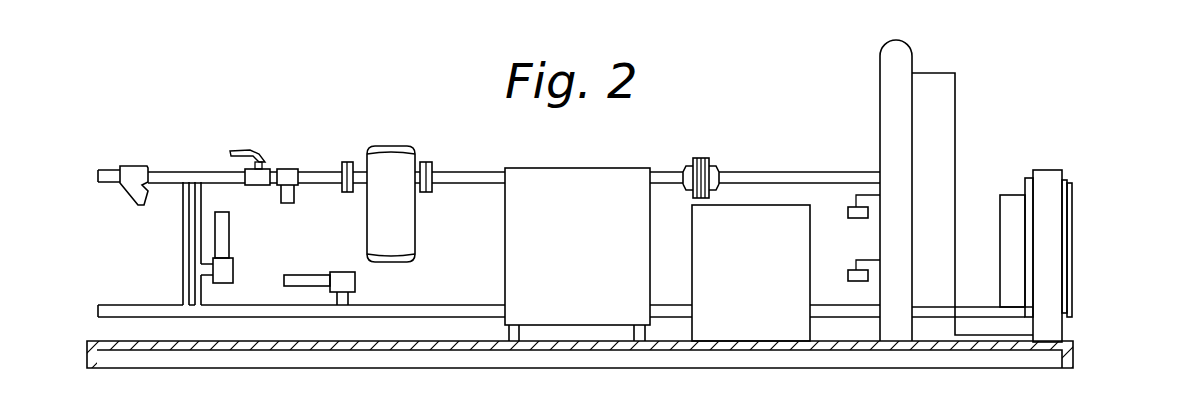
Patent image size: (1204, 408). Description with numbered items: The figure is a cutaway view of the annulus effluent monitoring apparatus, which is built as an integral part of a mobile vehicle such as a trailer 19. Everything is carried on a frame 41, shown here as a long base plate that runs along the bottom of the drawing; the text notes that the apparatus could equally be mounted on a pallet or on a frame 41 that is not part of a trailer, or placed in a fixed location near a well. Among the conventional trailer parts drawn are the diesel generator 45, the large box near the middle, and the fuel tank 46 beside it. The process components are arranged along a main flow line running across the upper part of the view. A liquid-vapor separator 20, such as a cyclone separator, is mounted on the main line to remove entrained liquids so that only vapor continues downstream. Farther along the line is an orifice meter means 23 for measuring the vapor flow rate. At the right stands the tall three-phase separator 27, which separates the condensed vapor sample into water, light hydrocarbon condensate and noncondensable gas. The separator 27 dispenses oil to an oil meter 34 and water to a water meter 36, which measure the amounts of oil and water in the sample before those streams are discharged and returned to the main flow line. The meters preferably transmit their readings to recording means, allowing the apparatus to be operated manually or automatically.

The trailer 19 is at (1013, 139).
The liquid-vapor separator 20 is at (390, 145).
The orifice meter means 23 is at (703, 158).
The three-phase separator 27 is at (880, 76).
The oil meter 34 is at (848, 213).
The water meter 36 is at (848, 275).
The frame 41 is at (1075, 351).
The diesel generator 45 is at (590, 250).
The fuel tank 46 is at (760, 317).